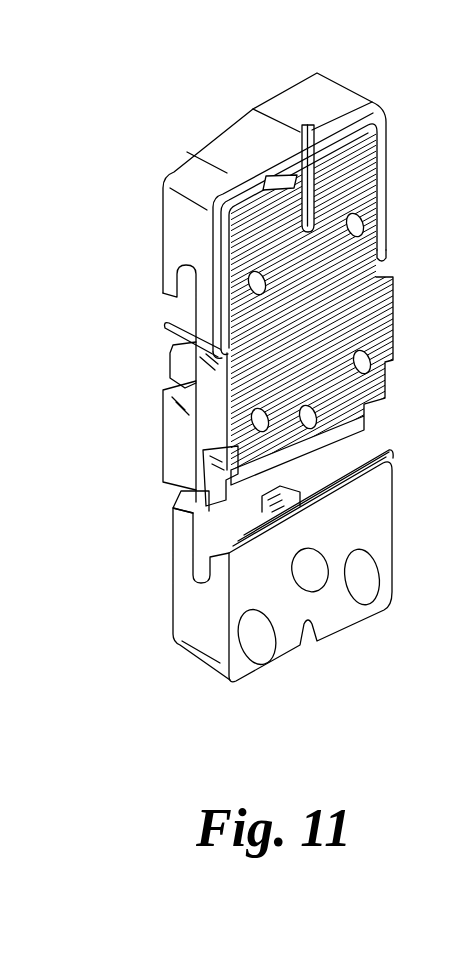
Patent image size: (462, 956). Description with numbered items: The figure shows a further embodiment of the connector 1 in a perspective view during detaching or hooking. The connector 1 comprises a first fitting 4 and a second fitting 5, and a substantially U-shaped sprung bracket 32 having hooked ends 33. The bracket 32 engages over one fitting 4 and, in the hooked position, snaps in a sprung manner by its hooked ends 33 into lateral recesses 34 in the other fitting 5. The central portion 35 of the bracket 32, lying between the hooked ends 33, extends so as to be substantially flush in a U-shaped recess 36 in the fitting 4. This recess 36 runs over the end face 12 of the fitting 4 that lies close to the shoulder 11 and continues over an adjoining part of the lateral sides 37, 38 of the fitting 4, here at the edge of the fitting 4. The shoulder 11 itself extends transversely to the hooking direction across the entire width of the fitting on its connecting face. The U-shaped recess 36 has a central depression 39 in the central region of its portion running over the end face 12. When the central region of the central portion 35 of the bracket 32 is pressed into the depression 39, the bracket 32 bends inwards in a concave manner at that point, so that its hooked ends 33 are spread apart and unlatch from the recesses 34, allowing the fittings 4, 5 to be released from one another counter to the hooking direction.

The connector 1 is at (279, 371).
The first fitting 4 is at (348, 100).
The second fitting 5 is at (188, 613).
The shoulder 11 is at (368, 517).
The end face 12 is at (324, 96).
The sprung bracket 32 is at (232, 197).
The hooked ends 33 is at (383, 259).
The lateral recesses 34 is at (176, 390).
The central portion 35 is at (309, 166).
The U-shaped recess 36 is at (212, 217).
The lateral side 37 is at (214, 427).
The lateral side 38 is at (394, 331).
The central depression 39 is at (280, 174).